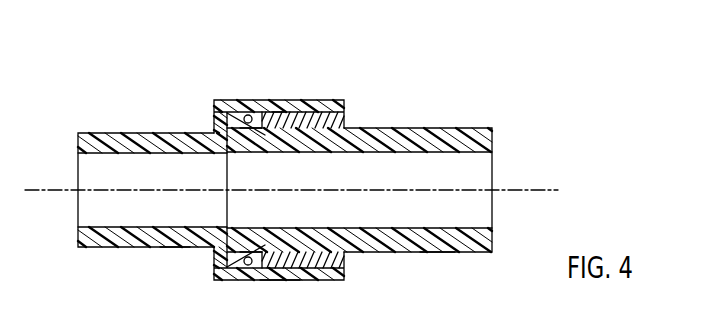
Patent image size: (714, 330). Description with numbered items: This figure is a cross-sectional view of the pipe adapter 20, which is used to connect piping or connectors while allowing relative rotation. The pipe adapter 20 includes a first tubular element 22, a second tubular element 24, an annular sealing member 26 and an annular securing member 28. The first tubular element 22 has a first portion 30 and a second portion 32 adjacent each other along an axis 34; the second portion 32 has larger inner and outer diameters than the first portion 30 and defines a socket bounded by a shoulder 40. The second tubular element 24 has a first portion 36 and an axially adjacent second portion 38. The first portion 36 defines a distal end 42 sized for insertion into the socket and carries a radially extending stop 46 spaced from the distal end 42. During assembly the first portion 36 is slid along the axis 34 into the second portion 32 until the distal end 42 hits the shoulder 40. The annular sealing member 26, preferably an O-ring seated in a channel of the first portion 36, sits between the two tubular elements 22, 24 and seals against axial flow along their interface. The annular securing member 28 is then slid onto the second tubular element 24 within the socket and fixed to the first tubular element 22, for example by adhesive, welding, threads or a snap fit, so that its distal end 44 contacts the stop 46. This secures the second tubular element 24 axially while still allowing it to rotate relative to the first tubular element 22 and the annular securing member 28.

The pipe adapter 20 is at (422, 62).
The first tubular element 22 is at (168, 133).
The second tubular element 24 is at (295, 118).
The annular sealing member 26 is at (242, 115).
The annular securing member 28 is at (345, 123).
The first portion of first tubular element 30 is at (175, 247).
The second portion of first tubular element 32 is at (279, 262).
The axis 34 is at (512, 190).
The first portion of second tubular element 36 is at (262, 262).
The second portion of second tubular element 38 is at (437, 252).
The shoulder 40 is at (229, 140).
The distal end of second tubular element 42 is at (217, 123).
The distal end of annular securing member 44 is at (265, 135).
The stop 46 is at (278, 113).